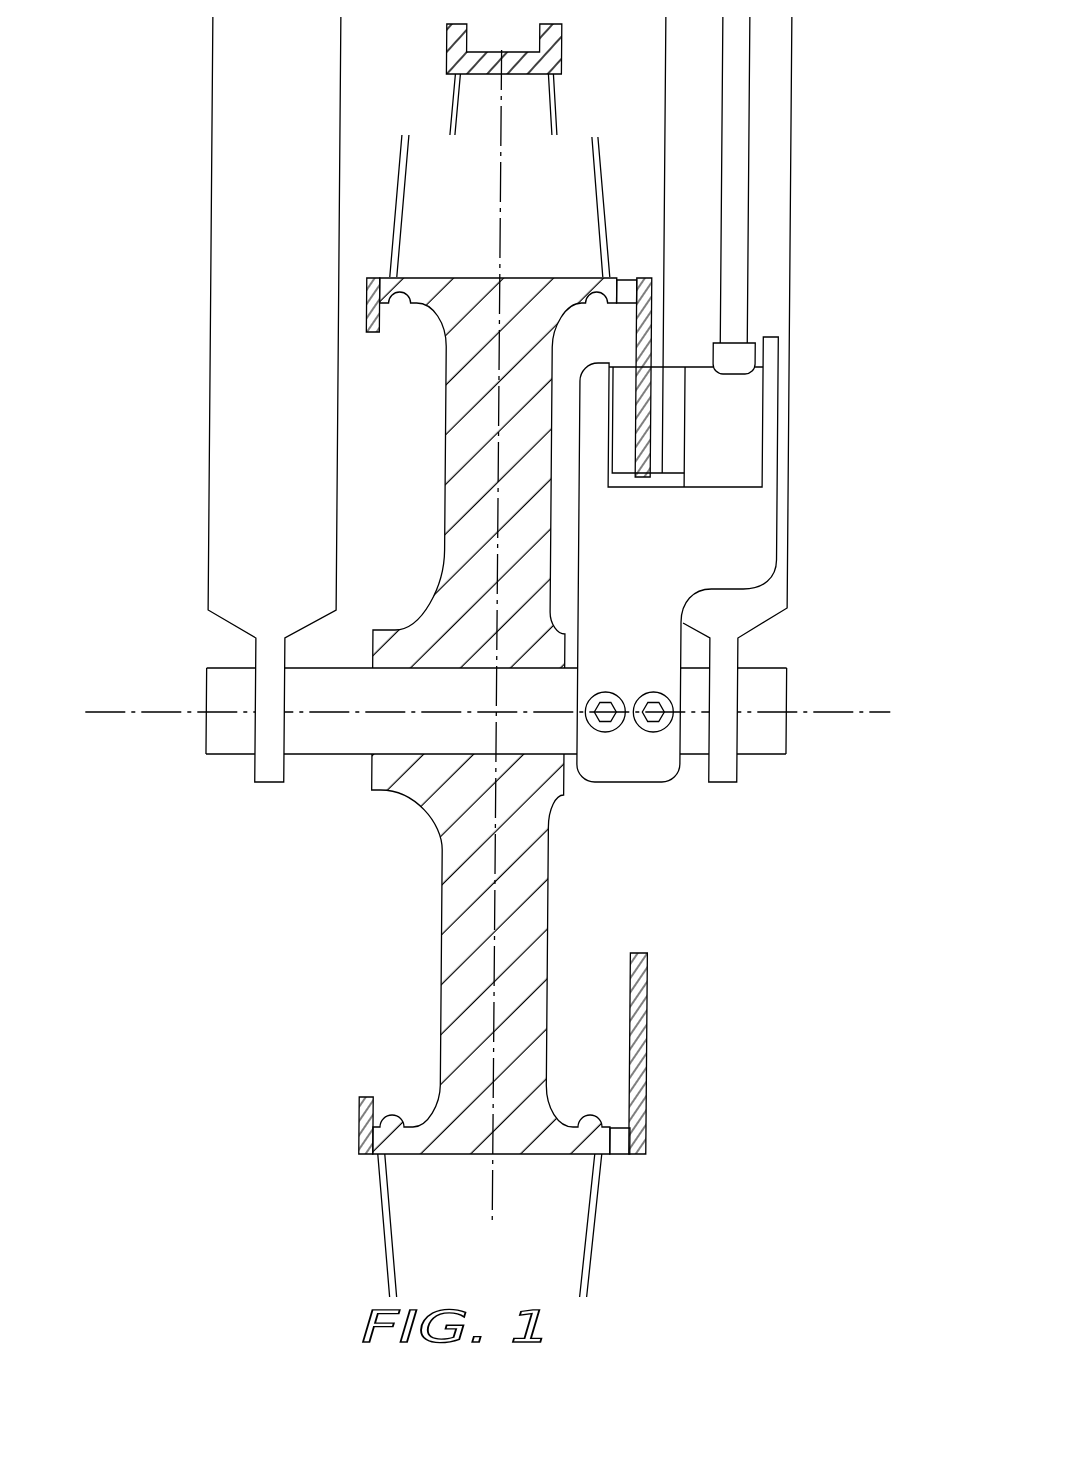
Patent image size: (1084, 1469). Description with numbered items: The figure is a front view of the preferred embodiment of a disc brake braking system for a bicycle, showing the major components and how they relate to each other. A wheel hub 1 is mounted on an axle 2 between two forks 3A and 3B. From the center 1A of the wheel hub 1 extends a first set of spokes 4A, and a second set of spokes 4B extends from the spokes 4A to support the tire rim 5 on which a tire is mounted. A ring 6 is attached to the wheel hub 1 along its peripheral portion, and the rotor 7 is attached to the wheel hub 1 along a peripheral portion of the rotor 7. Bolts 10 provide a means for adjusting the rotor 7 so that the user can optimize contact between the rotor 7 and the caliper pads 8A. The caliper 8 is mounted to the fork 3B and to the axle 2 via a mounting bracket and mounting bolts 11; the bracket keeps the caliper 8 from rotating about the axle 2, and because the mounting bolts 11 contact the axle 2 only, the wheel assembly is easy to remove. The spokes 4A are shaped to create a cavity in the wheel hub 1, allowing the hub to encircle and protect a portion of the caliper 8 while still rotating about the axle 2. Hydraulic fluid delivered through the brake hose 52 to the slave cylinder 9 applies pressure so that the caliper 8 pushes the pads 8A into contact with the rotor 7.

The wheel hub 1 is at (457, 716).
The center 1A is at (501, 713).
The axle 2 is at (213, 758).
The fork 3A is at (211, 567).
The fork 3B is at (798, 584).
The first set of spokes 4A is at (445, 468).
The second set of spokes 4B is at (600, 243).
The tire rim 5 is at (563, 62).
The ring 6 is at (376, 333).
The rotor 7 is at (656, 327).
The caliper 8 is at (622, 586).
The caliper pads 8A is at (631, 407).
The slave cylinder 9 is at (743, 451).
The bolts 10 is at (628, 277).
The mounting bolts 11 is at (621, 728).
The brake hose 52 is at (736, 192).